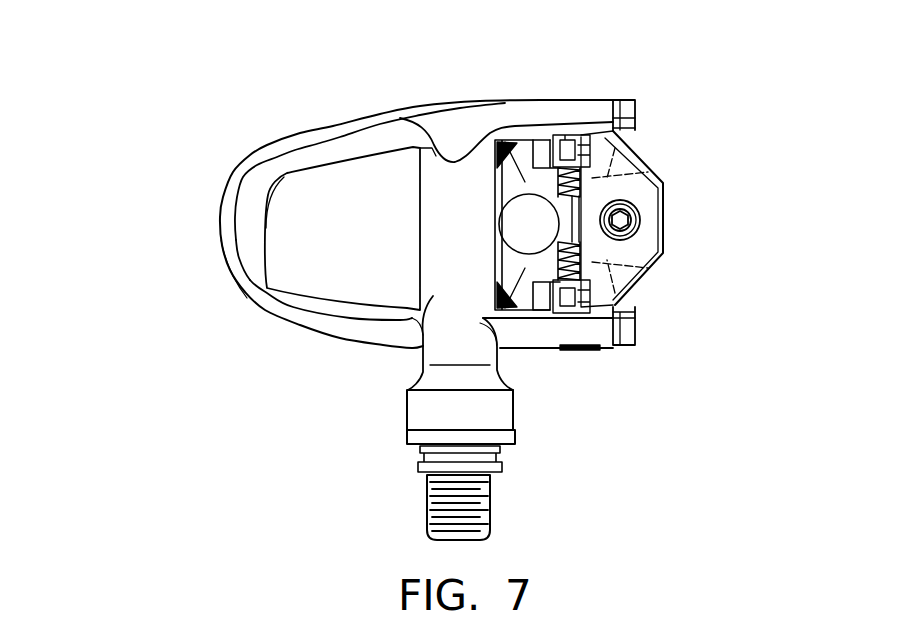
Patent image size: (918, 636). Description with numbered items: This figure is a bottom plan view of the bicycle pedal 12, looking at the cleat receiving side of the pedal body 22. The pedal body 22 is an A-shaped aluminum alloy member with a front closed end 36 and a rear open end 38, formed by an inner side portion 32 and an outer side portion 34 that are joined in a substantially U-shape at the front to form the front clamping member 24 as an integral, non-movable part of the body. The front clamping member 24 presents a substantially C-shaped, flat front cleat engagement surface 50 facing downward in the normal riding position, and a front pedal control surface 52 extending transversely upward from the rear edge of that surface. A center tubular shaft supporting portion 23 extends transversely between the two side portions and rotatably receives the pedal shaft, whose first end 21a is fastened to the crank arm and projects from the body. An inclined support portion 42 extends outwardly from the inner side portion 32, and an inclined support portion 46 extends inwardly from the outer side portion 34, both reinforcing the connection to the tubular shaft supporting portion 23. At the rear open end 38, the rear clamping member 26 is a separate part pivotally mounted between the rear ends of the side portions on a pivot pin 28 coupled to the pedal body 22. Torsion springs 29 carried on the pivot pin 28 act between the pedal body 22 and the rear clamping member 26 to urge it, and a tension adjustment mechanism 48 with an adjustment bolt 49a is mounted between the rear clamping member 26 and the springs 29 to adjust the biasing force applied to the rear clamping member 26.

The bicycle pedal 12 is at (665, 82).
The first end of the pedal shaft 21a is at (495, 515).
The pedal body 22 is at (421, 105).
The tubular shaft supporting portion 23 is at (450, 338).
The front clamping member 24 is at (218, 280).
The rear clamping member 26 is at (670, 215).
The pivot pin 28 is at (585, 350).
The torsion springs 29 is at (556, 212).
The inner side portion 32 is at (327, 322).
The outer side portion 34 is at (333, 130).
The front closed end 36 is at (220, 242).
The rear open end 38 is at (595, 100).
The support portion 42 is at (519, 280).
The support portion 46 is at (514, 168).
The tension adjustment mechanism 48 is at (528, 100).
The adjustment bolt 49a is at (640, 212).
The front cleat engagement surface 50 is at (257, 233).
The front pedal control surface 52 is at (265, 210).